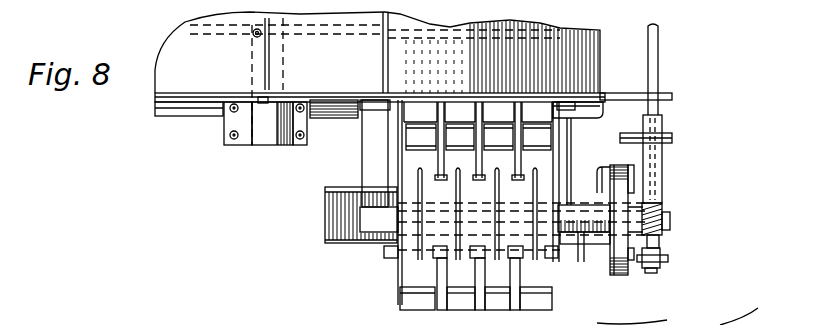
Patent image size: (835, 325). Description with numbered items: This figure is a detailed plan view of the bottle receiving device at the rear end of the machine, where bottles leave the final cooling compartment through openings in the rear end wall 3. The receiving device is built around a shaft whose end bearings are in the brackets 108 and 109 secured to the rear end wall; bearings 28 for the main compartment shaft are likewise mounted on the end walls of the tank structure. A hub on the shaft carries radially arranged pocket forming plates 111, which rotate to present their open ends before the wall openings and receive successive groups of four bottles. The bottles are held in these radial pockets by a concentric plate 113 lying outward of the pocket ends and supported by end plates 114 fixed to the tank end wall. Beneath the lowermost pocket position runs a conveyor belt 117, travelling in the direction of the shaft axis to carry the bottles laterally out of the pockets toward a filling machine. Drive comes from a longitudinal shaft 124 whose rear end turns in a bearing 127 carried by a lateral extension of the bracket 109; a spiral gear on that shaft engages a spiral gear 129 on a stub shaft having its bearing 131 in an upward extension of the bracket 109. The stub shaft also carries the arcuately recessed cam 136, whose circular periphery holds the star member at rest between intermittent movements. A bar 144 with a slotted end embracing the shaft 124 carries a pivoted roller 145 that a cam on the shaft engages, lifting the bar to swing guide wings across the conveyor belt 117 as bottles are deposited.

The rear end wall 3 is at (180, 92).
The bearings 28 is at (258, 138).
The bracket 108 is at (373, 160).
The bracket 109 is at (607, 128).
The pocket forming plates 111 is at (405, 273).
The concentric plate 113 is at (410, 96).
The end plates 114 is at (398, 133).
The conveyor belt 117 is at (338, 215).
The shaft 124 is at (659, 71).
The bearing 127 is at (662, 156).
The spiral gear 129 is at (662, 205).
The bearing 131 is at (582, 238).
The arcuately recessed cam 136 is at (617, 274).
The bar 144 is at (668, 258).
The pivoted roller 145 is at (648, 268).